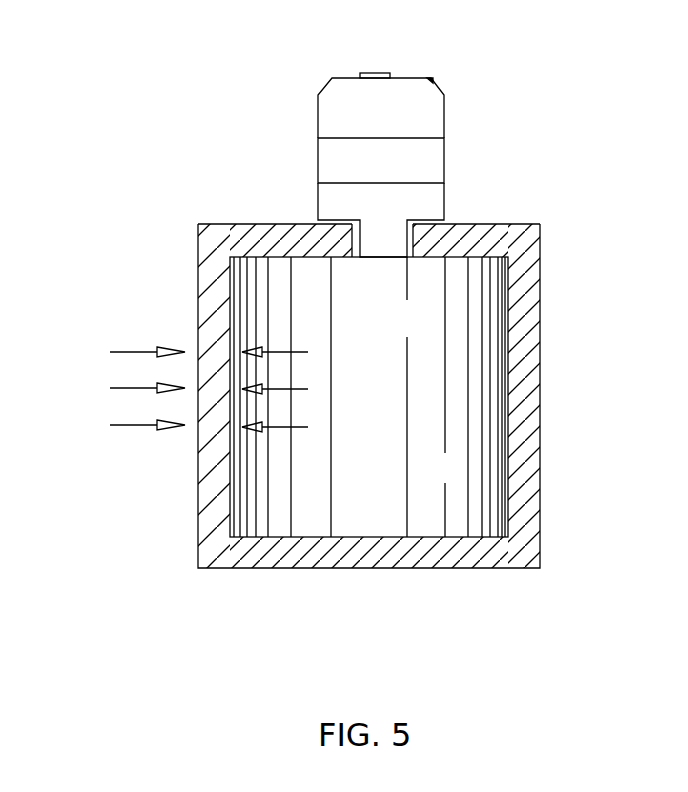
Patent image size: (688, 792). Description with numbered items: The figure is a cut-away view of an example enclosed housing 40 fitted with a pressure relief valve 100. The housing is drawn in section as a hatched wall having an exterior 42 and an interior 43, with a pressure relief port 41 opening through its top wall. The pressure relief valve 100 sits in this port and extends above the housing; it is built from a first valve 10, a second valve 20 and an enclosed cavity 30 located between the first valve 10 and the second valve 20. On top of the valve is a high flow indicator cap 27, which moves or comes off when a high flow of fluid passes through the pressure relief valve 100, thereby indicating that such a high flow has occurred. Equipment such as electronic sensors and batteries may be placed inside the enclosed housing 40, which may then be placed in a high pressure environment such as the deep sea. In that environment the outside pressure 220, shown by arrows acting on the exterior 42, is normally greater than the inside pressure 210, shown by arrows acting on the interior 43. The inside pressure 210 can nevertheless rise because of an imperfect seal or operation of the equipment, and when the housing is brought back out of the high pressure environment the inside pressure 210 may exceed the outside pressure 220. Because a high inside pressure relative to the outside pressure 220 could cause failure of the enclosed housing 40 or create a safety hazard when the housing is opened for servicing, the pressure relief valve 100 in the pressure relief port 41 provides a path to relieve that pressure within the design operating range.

The pressure relief valve 100 is at (563, 113).
The first valve 10 is at (338, 203).
The second valve 20 is at (335, 118).
The high flow indicator cap 27 is at (407, 76).
The enclosed cavity 30 is at (335, 160).
The enclosed housing 40 is at (533, 375).
The pressure relief port 41 is at (413, 258).
The exterior 42 is at (500, 224).
The interior 43 is at (501, 467).
The inside pressure 210 is at (310, 335).
The outside pressure 220 is at (110, 335).